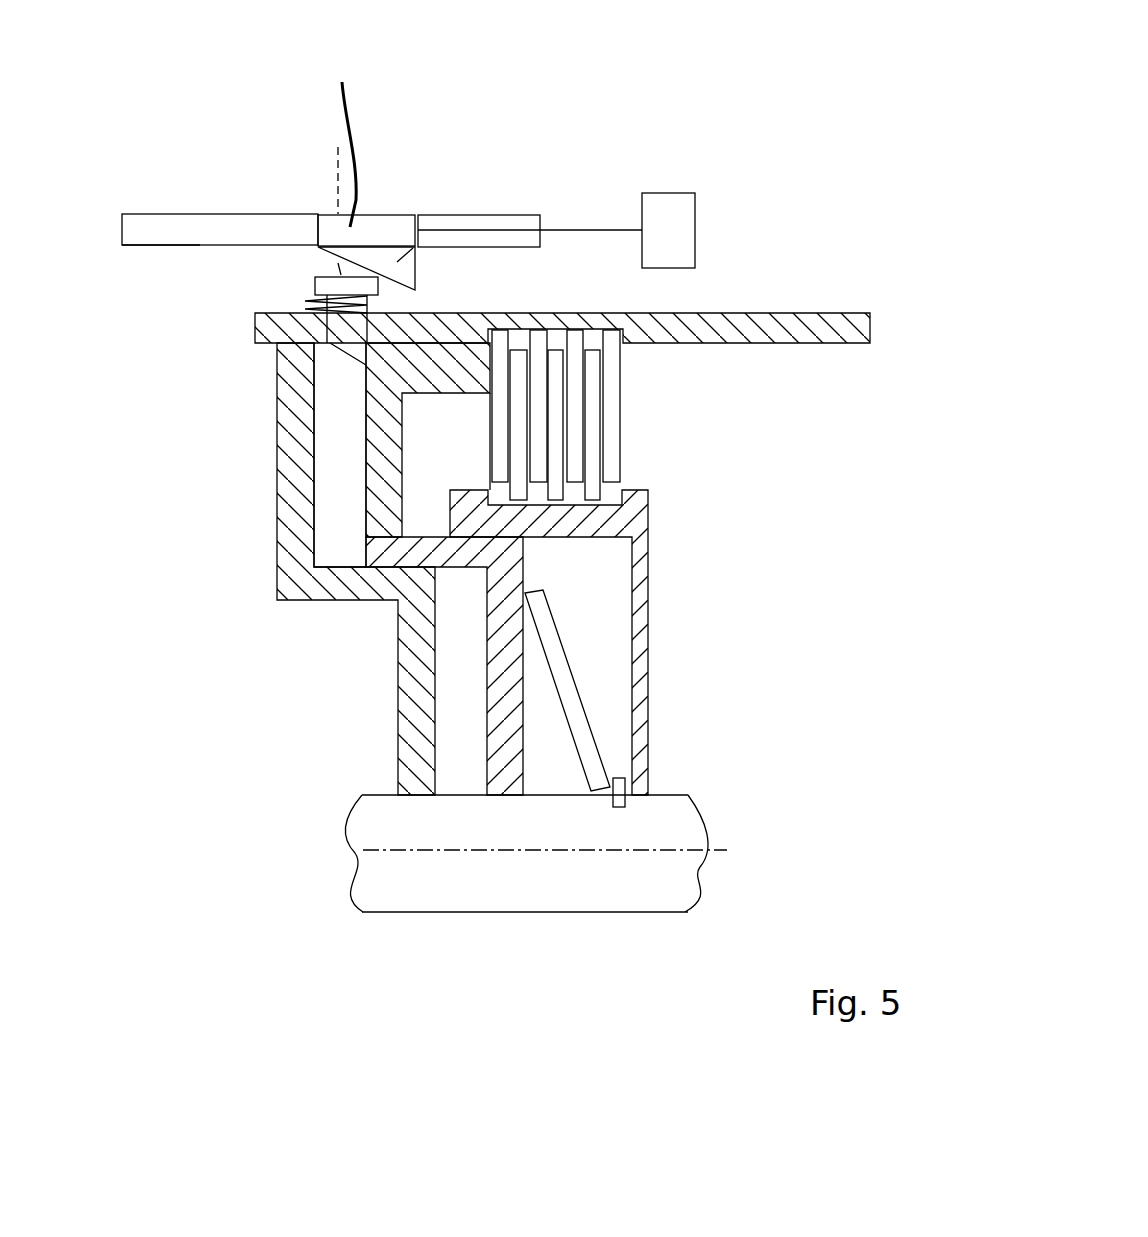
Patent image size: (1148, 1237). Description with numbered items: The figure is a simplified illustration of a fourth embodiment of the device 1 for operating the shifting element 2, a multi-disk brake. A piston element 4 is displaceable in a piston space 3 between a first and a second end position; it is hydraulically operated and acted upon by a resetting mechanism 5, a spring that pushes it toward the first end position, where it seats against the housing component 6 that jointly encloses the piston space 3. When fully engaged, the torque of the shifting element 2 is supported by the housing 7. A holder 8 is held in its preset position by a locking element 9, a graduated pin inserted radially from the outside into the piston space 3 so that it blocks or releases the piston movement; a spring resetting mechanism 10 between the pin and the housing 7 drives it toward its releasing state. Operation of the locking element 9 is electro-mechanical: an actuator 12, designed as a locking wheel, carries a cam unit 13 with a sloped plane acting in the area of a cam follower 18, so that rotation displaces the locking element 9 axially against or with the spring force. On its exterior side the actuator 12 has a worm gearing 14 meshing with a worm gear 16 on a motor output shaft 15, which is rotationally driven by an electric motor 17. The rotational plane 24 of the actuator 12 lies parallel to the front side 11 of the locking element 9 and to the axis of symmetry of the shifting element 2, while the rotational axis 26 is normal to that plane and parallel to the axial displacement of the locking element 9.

The device 1 is at (250, 152).
The shifting element 2 is at (640, 423).
The piston space 3 is at (333, 525).
The piston element 4 is at (383, 433).
The resetting mechanism 5 is at (585, 688).
The housing component 6 is at (330, 587).
The housing 7 is at (750, 317).
The holder 8 is at (380, 188).
The locking element 9 is at (314, 283).
The spring resetting mechanism 10 is at (385, 303).
The front section 11 is at (330, 273).
The actuator 12 is at (481, 214).
The cam unit 13 is at (422, 262).
The worm gearing 14 is at (190, 214).
The motor output shaft 15 is at (585, 228).
The worm gear 16 is at (343, 138).
The electric motor 17 is at (670, 217).
The cam follower 18 is at (410, 214).
The rotational plane 24 is at (170, 247).
The rotational axis 26 is at (337, 173).